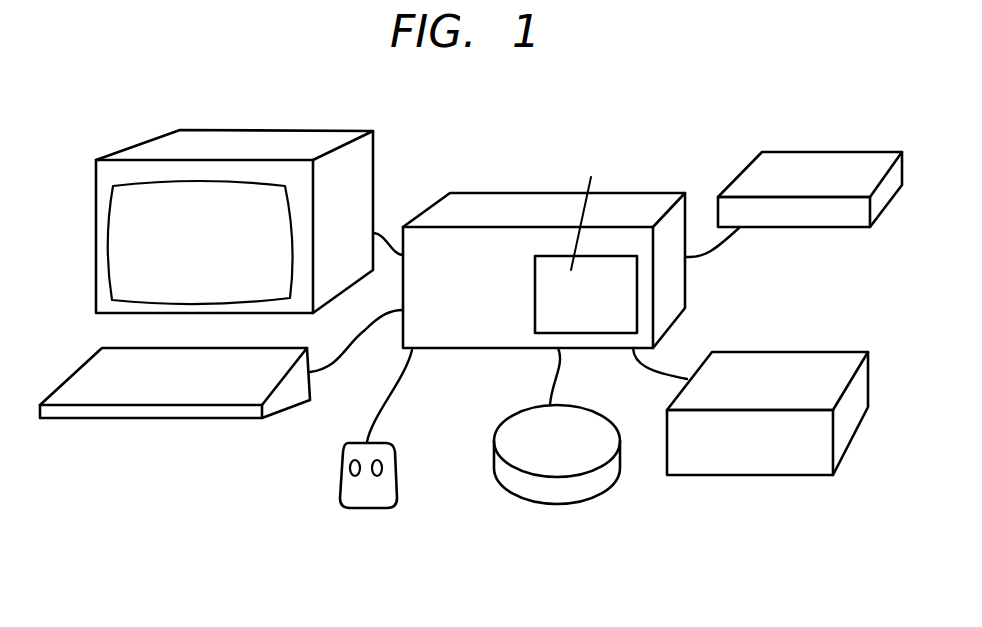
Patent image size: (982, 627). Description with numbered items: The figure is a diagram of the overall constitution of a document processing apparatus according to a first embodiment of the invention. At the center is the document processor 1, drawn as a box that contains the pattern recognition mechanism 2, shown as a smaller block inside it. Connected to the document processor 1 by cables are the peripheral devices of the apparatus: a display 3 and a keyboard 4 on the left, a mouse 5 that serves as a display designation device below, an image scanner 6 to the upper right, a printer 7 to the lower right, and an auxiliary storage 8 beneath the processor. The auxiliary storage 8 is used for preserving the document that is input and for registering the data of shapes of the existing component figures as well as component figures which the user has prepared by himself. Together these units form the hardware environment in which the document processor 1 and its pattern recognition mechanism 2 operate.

The document processor 1 is at (520, 193).
The pattern recognition mechanism 2 is at (597, 256).
The display 3 is at (259, 130).
The keyboard 4 is at (140, 419).
The mouse 5 is at (340, 483).
The image scanner 6 is at (803, 229).
The printer 7 is at (782, 352).
The auxiliary storage 8 is at (497, 463).